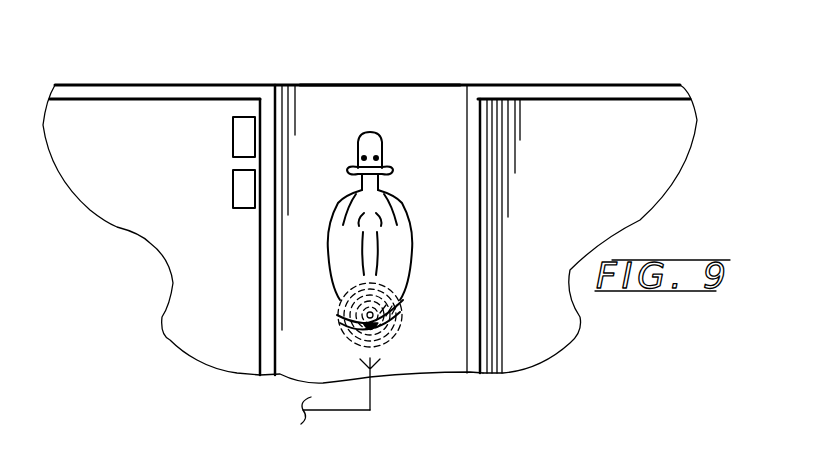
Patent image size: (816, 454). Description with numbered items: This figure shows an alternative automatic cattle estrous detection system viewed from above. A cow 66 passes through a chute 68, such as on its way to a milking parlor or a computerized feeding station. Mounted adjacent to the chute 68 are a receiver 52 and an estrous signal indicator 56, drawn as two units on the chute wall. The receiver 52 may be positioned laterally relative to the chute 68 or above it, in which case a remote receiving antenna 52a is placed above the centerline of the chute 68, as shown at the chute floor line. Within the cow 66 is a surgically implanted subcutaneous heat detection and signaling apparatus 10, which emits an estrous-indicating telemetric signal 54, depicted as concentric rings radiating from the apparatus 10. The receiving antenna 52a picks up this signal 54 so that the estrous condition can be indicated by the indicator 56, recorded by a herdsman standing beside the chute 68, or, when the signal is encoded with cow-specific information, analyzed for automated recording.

The chute 68 is at (408, 107).
The receiver 52 is at (247, 138).
The estrous signal indicator 56 is at (243, 191).
The estrous-indicating telemetric signal 54 is at (348, 333).
The subcutaneous heat detection and signaling apparatus 10 is at (407, 300).
The cow 66 is at (397, 326).
The remote receiving antenna 52a is at (372, 372).